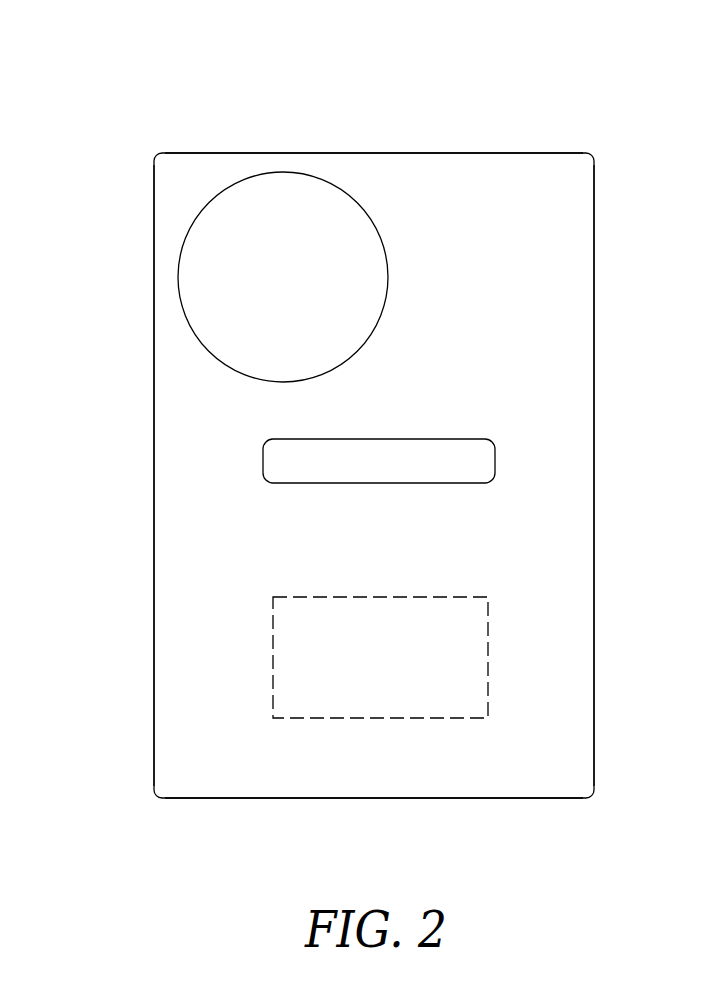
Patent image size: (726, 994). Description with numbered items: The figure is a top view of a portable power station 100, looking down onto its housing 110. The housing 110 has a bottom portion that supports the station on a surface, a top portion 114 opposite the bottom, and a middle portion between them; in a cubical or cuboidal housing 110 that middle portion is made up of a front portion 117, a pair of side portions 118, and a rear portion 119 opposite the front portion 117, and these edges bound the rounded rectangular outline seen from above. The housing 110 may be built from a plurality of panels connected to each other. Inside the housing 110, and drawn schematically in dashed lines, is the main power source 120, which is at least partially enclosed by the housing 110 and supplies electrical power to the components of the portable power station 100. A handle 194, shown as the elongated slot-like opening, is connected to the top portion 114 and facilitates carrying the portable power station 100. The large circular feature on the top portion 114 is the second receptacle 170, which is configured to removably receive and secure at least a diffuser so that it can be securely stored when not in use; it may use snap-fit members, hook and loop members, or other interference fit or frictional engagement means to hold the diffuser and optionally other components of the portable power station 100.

The portable power station 100 is at (122, 58).
The housing 110 is at (146, 563).
The top portion 114 is at (547, 249).
The front portion 117 is at (427, 152).
The side portions 118 is at (154, 400).
The rear portion 119 is at (440, 798).
The main power source 120 is at (393, 672).
The second receptacle 170 is at (203, 281).
The handle 194 is at (442, 453).